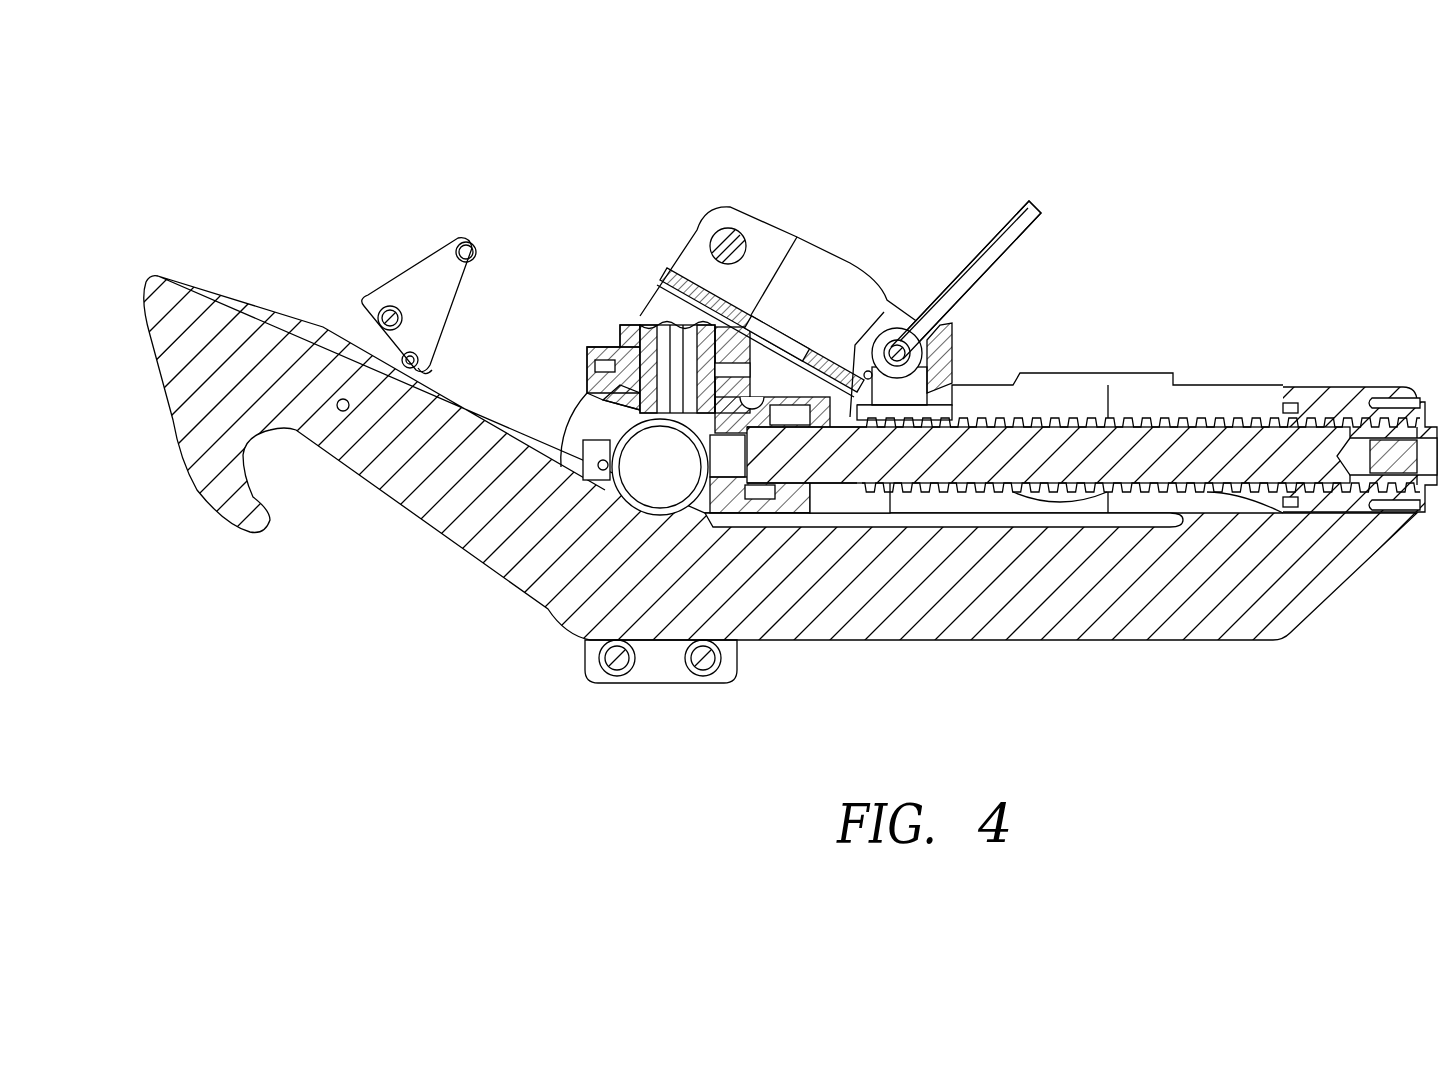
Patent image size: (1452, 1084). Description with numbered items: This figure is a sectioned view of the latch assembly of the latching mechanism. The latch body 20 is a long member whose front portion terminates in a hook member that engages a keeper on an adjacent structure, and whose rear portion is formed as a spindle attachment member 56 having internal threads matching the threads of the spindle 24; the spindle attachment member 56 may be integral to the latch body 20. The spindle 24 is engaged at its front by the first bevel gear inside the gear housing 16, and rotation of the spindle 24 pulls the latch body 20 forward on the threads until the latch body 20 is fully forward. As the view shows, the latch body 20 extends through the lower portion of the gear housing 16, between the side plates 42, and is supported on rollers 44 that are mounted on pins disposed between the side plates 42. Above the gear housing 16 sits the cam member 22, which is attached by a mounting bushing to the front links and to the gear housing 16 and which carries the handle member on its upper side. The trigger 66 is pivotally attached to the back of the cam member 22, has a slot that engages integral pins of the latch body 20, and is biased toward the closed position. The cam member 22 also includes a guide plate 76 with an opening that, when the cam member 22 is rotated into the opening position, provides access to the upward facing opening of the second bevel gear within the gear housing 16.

The gear housing 16 is at (603, 334).
The latch body 20 is at (1085, 643).
The cam member 22 is at (792, 224).
The spindle 24 is at (1240, 414).
The side plates 42 is at (658, 667).
The rollers 44 is at (602, 657).
The spindle attachment member 56 is at (1388, 388).
The trigger 66 is at (1032, 207).
The guide plate 76 is at (690, 280).